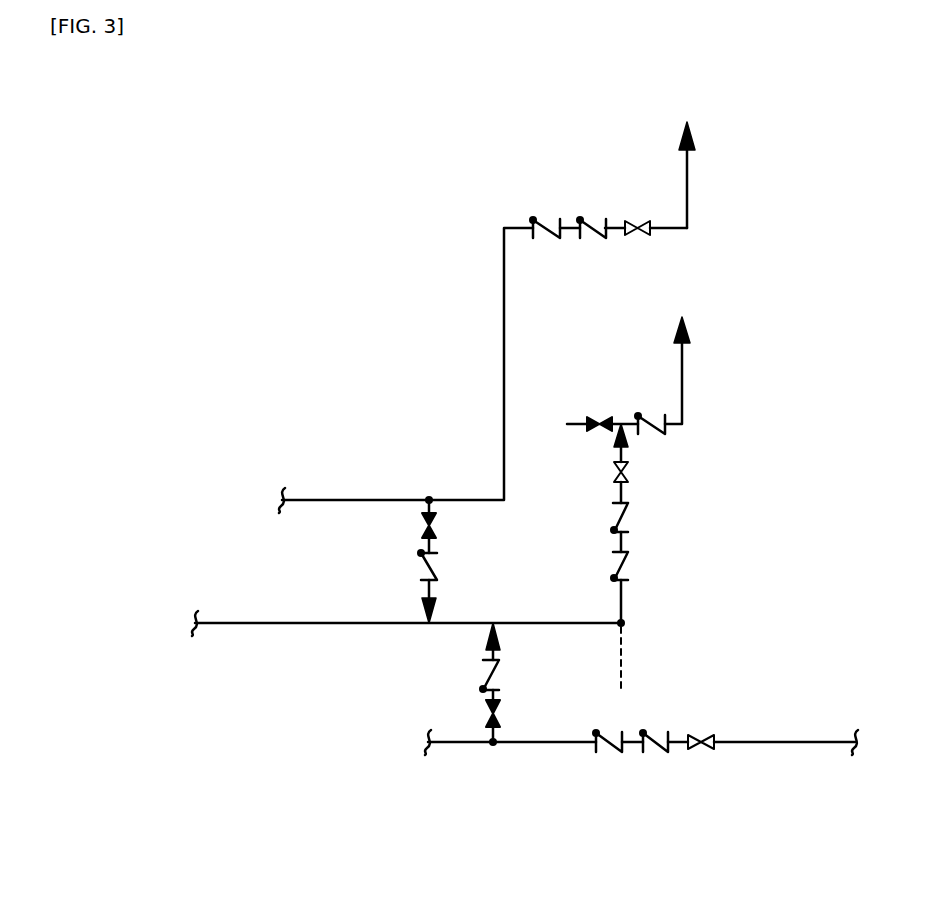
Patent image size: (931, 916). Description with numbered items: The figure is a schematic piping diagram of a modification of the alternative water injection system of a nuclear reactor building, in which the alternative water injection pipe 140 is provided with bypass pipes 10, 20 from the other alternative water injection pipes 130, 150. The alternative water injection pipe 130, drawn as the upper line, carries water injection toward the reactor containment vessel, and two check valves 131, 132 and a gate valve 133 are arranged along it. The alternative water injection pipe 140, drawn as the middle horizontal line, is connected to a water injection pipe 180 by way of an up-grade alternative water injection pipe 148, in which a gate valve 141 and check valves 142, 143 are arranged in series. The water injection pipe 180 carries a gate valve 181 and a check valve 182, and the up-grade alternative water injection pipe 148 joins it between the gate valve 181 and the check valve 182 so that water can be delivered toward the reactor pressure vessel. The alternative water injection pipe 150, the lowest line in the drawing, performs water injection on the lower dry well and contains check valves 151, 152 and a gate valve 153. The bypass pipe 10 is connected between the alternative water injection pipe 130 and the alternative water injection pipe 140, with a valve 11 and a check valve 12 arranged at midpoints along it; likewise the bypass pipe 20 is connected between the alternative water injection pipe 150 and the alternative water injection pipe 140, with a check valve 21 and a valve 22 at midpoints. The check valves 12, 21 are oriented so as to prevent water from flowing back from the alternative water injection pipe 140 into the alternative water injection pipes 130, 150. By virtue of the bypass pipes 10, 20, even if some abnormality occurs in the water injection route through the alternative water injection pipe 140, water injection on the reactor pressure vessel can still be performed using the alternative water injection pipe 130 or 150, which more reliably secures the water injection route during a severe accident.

The bypass pipe 10 is at (432, 545).
The valve 11 is at (418, 528).
The check valve 12 is at (419, 567).
The bypass pipe 20 is at (497, 653).
The check valve 21 is at (480, 678).
The valve 22 is at (480, 715).
The alternative water injection pipe 130 is at (370, 500).
The check valve 131 is at (547, 218).
The check valve 132 is at (593, 218).
The gate valve 133 is at (640, 217).
The alternative water injection pipe 140 is at (577, 623).
The gate valve 141 is at (630, 472).
The check valve 142 is at (633, 515).
The check valve 143 is at (633, 567).
The up-grade alternative water injection pipe 148 is at (625, 600).
The alternative water injection pipe 150 is at (538, 742).
The check valve 151 is at (610, 752).
The check valve 152 is at (657, 751).
The gate valve 153 is at (702, 753).
The water injection pipe 180 is at (683, 382).
The gate valve 181 is at (600, 417).
The check valve 182 is at (653, 413).